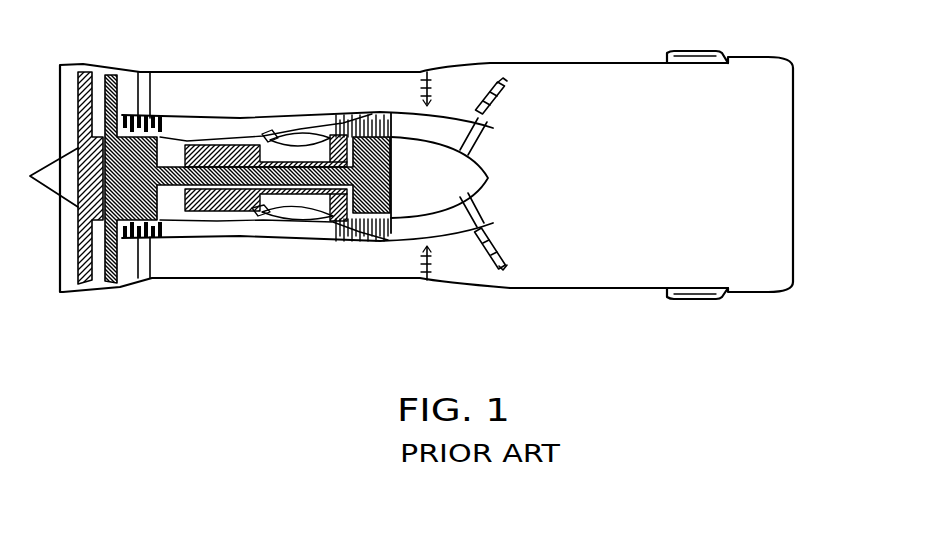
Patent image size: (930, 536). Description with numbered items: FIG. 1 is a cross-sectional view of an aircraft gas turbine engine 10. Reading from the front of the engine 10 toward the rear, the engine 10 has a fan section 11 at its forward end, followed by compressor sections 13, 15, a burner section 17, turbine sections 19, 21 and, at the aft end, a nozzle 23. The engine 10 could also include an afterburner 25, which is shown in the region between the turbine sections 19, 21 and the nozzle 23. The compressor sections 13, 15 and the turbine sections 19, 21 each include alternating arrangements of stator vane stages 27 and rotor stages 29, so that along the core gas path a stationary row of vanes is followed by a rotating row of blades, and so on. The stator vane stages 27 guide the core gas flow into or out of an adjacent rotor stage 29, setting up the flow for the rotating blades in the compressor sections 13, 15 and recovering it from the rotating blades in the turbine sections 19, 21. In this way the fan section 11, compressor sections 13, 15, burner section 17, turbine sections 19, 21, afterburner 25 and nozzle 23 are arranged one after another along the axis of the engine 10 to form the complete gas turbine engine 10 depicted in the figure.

The gas turbine engine 10 is at (420, 65).
The fan section 11 is at (98, 78).
The compressor section 13 is at (110, 281).
The compressor section 15 is at (222, 222).
The burner section 17 is at (283, 214).
The turbine section 19 is at (298, 135).
The turbine section 21 is at (368, 232).
The nozzle 23 is at (782, 178).
The afterburner 25 is at (495, 247).
The stator vane stages 27 is at (336, 220).
The rotor stages 29 is at (377, 116).